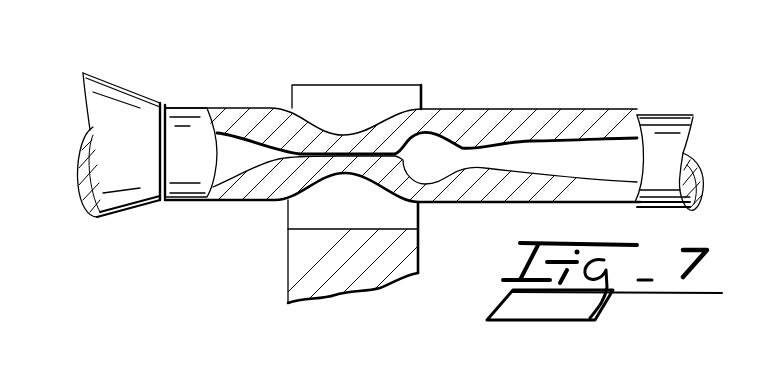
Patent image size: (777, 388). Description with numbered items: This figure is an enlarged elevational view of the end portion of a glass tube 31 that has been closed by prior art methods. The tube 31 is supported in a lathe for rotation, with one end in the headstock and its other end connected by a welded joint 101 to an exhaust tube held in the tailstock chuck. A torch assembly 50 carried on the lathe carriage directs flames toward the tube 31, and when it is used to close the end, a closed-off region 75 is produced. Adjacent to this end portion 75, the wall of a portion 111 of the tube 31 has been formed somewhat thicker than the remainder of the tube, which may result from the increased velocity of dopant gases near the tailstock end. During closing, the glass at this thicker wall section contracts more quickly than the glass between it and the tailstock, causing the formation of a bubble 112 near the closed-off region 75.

The welded joint 101 is at (163, 102).
The closed-off region 75 is at (343, 122).
The torch assembly 50 is at (380, 175).
The portion of the tube 111 is at (488, 138).
The bubble 112 is at (430, 167).
The glass starting tube 31 is at (658, 113).